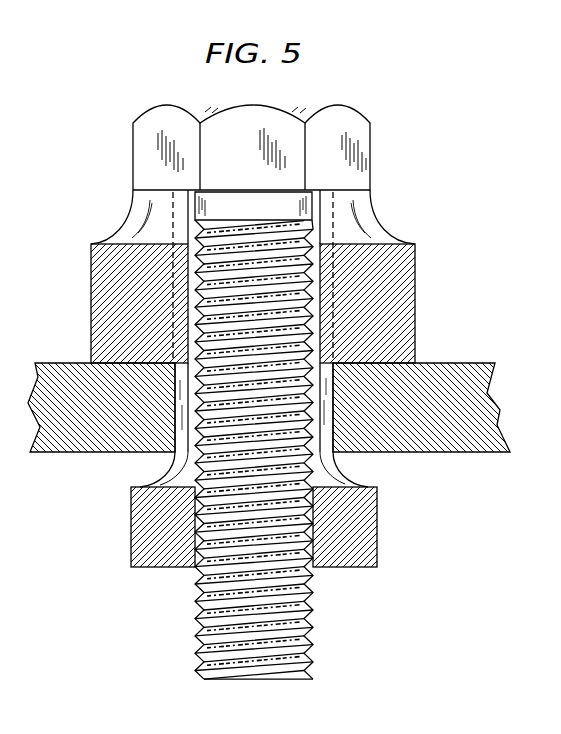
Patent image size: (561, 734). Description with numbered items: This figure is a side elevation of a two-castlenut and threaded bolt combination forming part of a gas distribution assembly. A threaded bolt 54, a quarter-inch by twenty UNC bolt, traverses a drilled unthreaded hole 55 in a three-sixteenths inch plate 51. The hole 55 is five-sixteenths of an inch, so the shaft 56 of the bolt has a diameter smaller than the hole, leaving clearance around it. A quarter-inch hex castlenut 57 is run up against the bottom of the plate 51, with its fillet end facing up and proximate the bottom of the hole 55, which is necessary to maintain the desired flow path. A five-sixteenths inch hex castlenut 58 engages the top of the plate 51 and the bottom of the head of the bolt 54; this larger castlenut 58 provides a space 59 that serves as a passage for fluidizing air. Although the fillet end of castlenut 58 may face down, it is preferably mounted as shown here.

The plate 51 is at (483, 362).
The threaded bolt 54 is at (372, 146).
The drilled unthreaded hole 55 is at (188, 443).
The shaft 56 is at (198, 621).
The hex castlenut 57 is at (131, 537).
The hex castlenut 58 is at (415, 280).
The space 59 is at (313, 323).